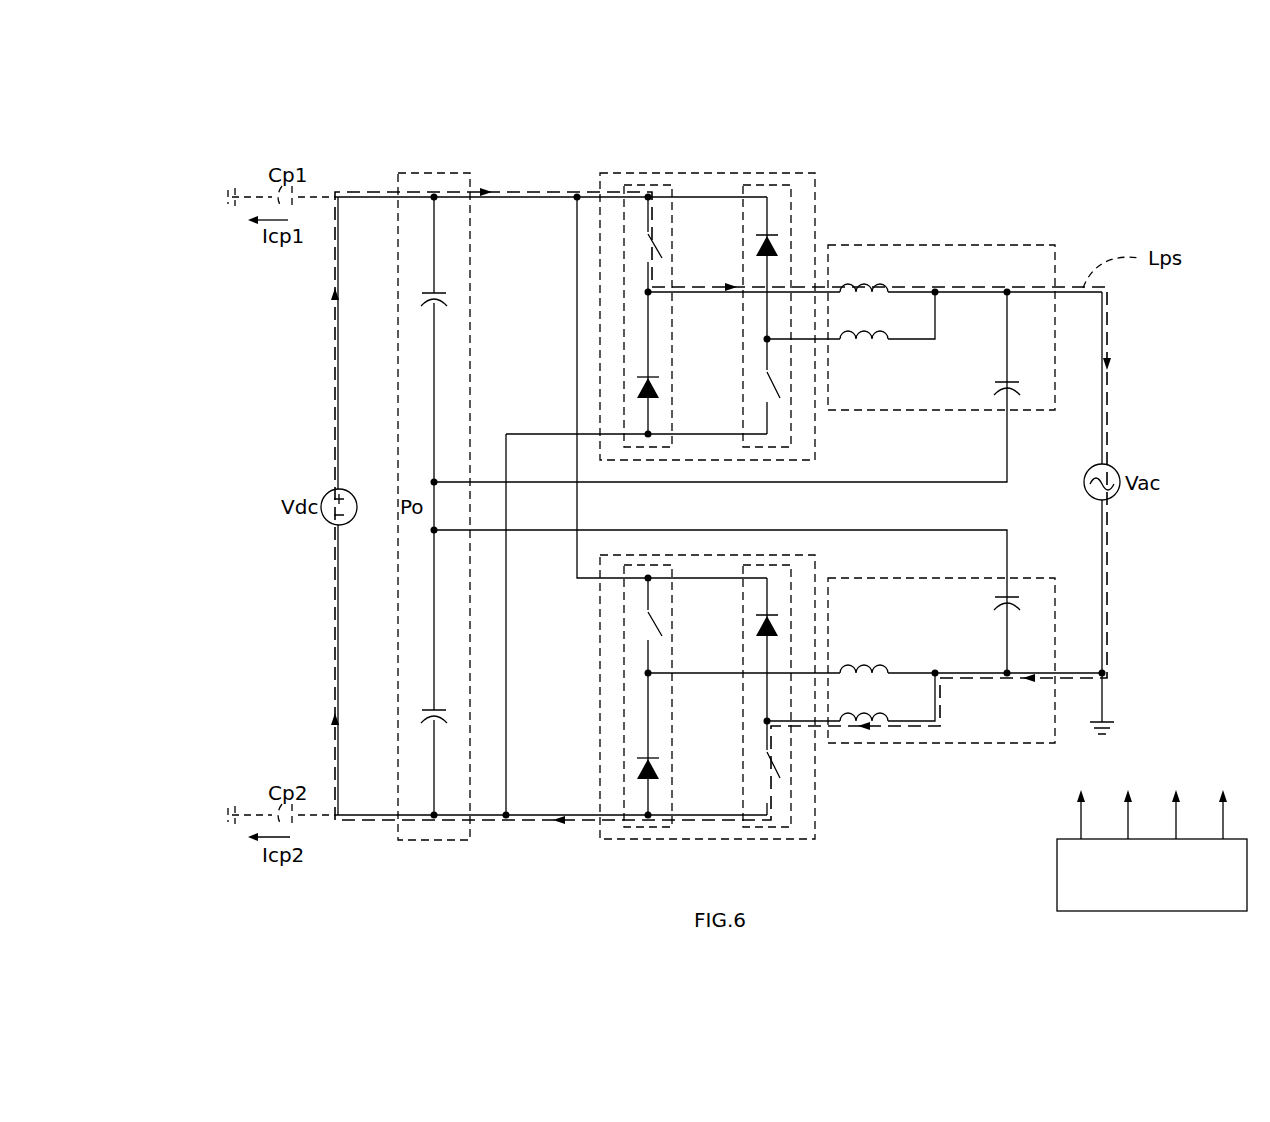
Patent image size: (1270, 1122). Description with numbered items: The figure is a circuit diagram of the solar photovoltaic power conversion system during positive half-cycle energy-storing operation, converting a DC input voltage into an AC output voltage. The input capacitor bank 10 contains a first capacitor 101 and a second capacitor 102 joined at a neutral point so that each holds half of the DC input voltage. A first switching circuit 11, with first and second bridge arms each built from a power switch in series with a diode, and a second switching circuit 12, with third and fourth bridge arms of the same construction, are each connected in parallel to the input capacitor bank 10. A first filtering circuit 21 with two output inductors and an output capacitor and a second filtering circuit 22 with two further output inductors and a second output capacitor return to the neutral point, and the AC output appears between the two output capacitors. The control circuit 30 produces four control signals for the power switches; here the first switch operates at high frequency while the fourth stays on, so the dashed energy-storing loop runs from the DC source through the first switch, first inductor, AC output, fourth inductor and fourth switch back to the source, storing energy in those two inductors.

The input capacitor bank 10 is at (419, 483).
The first capacitor 101 is at (454, 299).
The second capacitor 102 is at (454, 716).
The first switching circuit 11 is at (705, 173).
The second switching circuit 12 is at (705, 840).
The first filtering circuit 21 is at (940, 245).
The second filtering circuit 22 is at (940, 743).
The control circuit 30 is at (1057, 878).